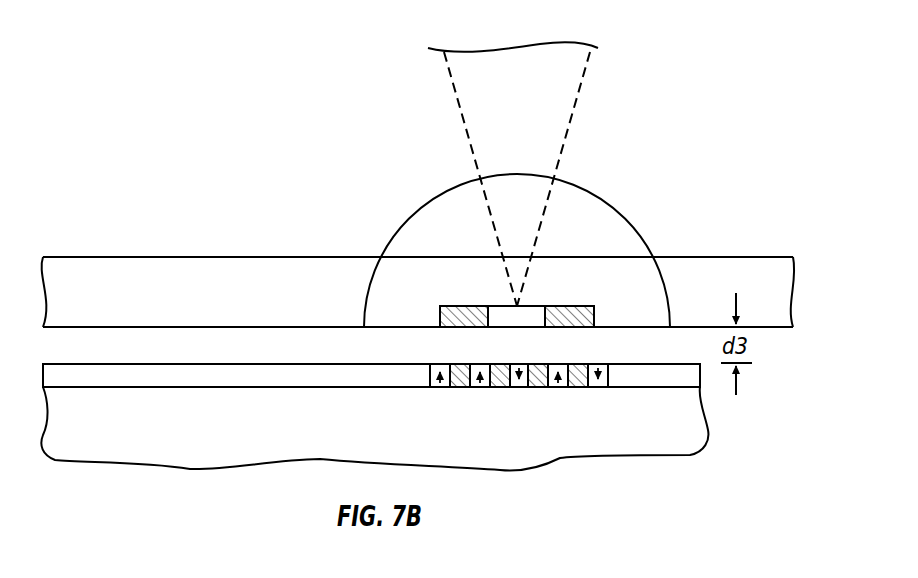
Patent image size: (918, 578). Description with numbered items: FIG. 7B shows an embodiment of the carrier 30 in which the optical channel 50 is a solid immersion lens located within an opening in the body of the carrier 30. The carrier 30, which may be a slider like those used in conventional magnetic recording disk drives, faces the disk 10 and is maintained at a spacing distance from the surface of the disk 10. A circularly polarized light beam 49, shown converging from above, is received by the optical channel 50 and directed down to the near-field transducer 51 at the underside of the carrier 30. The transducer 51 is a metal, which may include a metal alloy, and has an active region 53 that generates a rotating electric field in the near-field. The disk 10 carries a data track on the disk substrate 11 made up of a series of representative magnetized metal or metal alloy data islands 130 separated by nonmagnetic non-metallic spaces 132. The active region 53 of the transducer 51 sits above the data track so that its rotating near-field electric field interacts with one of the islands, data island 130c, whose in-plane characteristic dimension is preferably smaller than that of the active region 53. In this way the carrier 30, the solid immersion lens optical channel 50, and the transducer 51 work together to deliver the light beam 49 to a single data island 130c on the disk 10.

The circularly polarized light beam 49 is at (572, 73).
The carrier 30 is at (737, 244).
The optical channel 50 is at (590, 208).
The near-field transducer 51 is at (585, 316).
The active region 53 is at (527, 313).
The disk 10 is at (402, 429).
The disk substrate 11 is at (698, 433).
The data islands 130 is at (474, 363).
The data island 130c is at (518, 388).
The nonmagnetic non-metallic spaces 132 is at (495, 388).